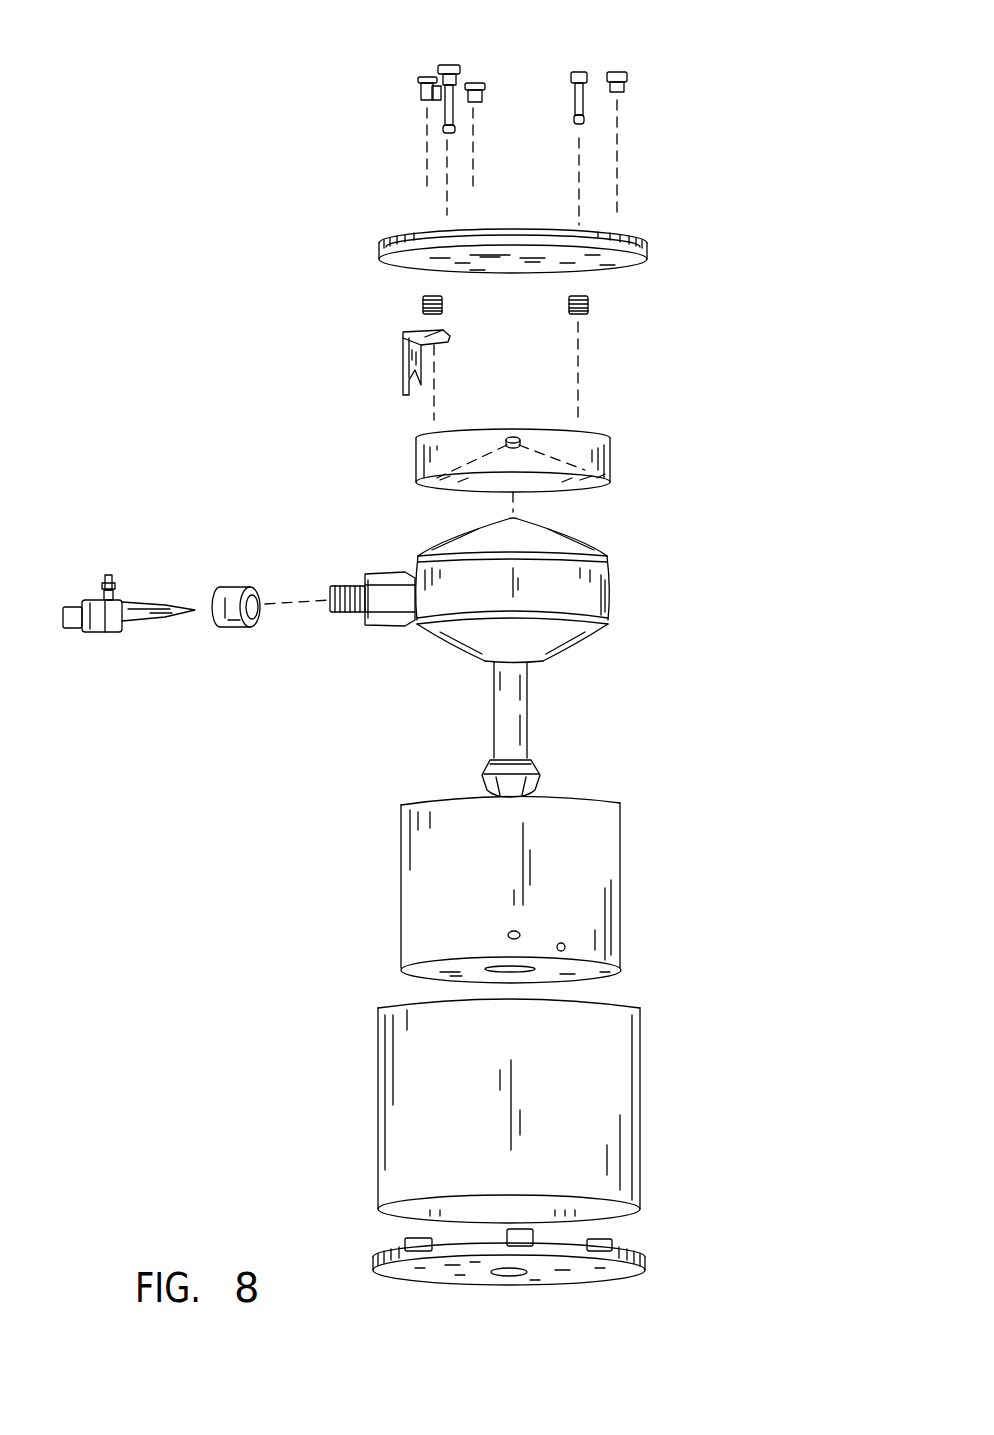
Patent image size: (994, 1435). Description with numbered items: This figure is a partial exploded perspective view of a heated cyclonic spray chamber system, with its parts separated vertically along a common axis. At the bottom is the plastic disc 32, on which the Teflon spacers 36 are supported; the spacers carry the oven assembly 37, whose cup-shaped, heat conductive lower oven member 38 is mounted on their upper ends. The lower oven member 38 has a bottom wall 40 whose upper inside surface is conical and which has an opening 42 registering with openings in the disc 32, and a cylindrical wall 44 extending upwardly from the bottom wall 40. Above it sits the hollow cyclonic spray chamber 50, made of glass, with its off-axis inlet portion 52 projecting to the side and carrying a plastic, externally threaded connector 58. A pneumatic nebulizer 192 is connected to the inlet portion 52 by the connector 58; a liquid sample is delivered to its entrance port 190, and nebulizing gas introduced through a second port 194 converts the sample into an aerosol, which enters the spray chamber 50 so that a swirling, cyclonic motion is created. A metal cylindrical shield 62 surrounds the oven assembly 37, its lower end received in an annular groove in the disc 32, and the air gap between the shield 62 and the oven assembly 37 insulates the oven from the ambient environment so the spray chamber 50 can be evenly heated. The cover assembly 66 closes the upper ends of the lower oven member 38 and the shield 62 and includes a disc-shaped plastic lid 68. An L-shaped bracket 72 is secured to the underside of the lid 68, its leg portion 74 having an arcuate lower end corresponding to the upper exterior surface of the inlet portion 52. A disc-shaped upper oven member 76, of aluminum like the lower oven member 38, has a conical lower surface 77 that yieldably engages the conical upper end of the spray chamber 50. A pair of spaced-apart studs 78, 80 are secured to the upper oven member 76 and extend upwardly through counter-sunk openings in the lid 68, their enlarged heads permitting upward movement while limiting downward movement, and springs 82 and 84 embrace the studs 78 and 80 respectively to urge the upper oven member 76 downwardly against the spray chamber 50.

The plastic disc 32 is at (646, 1262).
The Teflon spacers 36 is at (615, 1243).
The oven assembly 37 is at (660, 846).
The lower oven member 38 is at (597, 907).
The bottom wall 40 is at (585, 978).
The opening 42 is at (500, 966).
The cylindrical wall 44 is at (475, 877).
The cyclonic spray chamber 50 is at (645, 565).
The inlet portion 52 is at (384, 597).
The externally threaded connector 58 is at (362, 608).
The cylindrical shield 62 is at (603, 1105).
The cover assembly 66 is at (656, 210).
The lid 68 is at (648, 250).
The L-shaped bracket 72 is at (370, 339).
The leg portion 74 is at (403, 368).
The upper oven member 76 is at (618, 435).
The lower surface 77 is at (612, 452).
The stud 78 is at (461, 66).
The stud 80 is at (583, 70).
The spring 82 is at (421, 300).
The spring 84 is at (589, 300).
The entrance port 190 is at (62, 620).
The pneumatic nebulizer 192 is at (152, 574).
The second port 194 is at (110, 572).